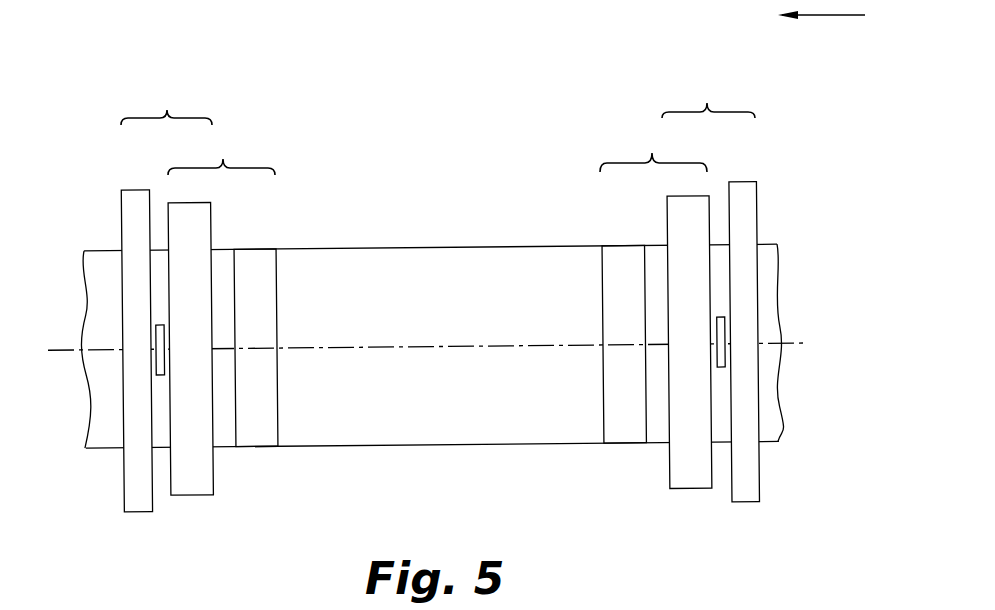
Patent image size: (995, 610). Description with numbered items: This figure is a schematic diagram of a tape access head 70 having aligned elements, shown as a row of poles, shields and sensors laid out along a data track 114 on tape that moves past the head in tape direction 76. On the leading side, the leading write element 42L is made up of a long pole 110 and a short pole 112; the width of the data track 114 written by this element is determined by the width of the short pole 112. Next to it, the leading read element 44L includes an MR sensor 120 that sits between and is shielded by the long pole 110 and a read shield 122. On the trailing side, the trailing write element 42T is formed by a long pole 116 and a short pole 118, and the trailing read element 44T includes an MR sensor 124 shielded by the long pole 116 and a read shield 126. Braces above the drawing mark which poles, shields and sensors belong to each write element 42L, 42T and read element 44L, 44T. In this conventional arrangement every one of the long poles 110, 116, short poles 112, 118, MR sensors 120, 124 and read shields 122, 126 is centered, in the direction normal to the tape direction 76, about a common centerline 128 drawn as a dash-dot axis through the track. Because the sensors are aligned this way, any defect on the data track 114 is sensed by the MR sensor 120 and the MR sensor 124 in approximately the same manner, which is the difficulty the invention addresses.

The tape head 70 is at (96, 95).
The tape direction 76 is at (820, 15).
The trailing read element 44T is at (166, 104).
The trailing write element 42T is at (221, 154).
The leading read element 44L is at (708, 99).
The leading write element 42L is at (653, 151).
The data track 114 is at (466, 447).
The centerline 128 is at (797, 338).
The short pole 118 is at (262, 449).
The short pole 112 is at (623, 444).
The read shield 126 is at (140, 512).
The long pole 116 is at (198, 497).
The long pole 110 is at (688, 490).
The read shield 122 is at (747, 503).
The MR sensor 124 is at (156, 366).
The MR sensor 120 is at (725, 356).